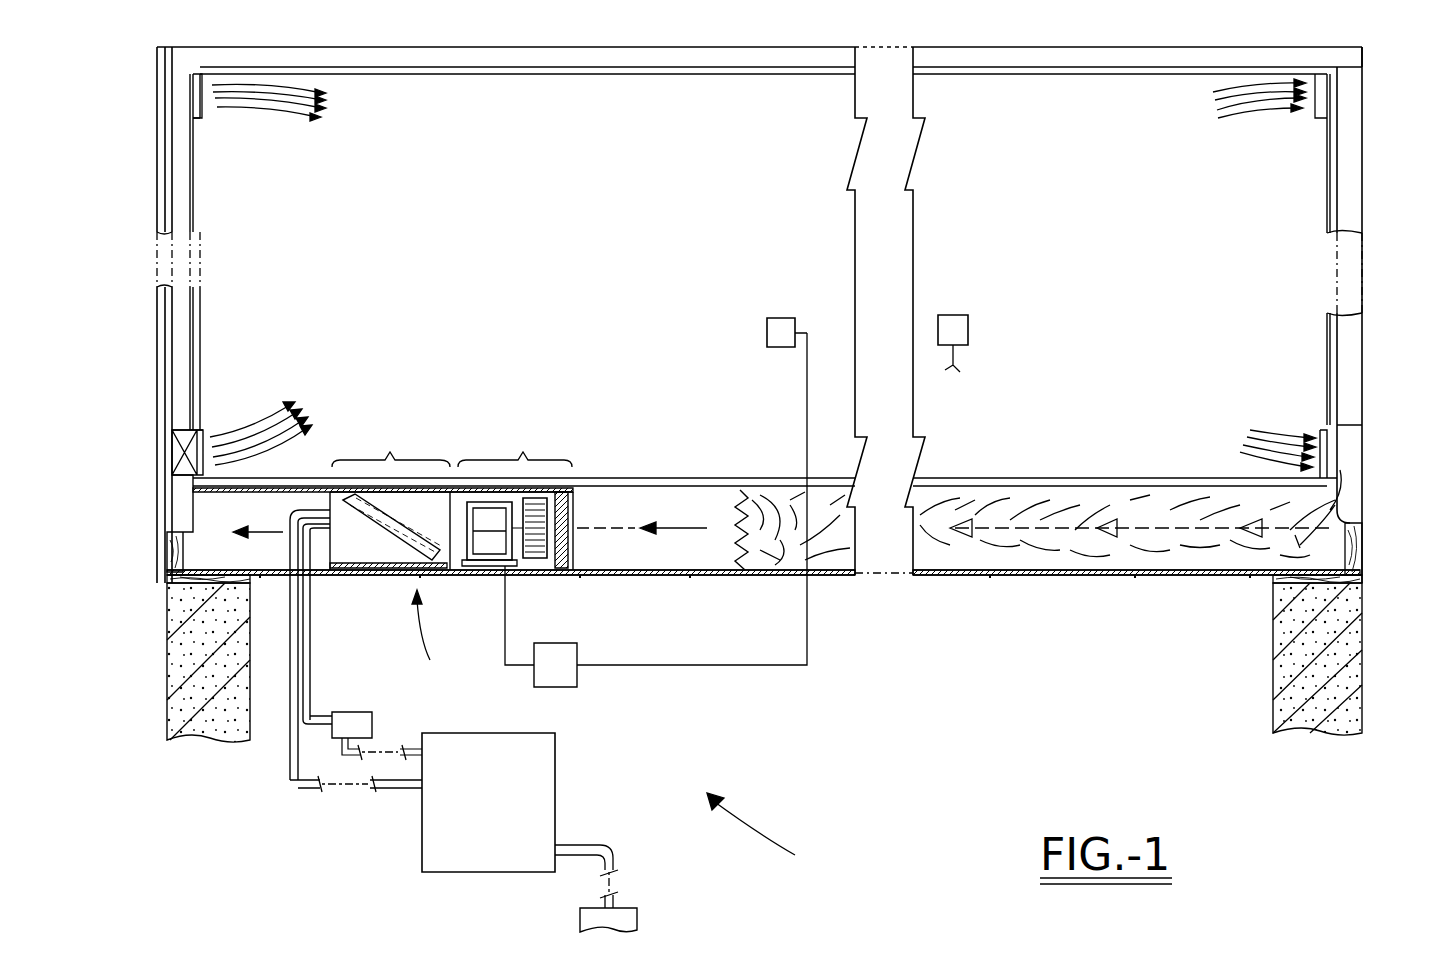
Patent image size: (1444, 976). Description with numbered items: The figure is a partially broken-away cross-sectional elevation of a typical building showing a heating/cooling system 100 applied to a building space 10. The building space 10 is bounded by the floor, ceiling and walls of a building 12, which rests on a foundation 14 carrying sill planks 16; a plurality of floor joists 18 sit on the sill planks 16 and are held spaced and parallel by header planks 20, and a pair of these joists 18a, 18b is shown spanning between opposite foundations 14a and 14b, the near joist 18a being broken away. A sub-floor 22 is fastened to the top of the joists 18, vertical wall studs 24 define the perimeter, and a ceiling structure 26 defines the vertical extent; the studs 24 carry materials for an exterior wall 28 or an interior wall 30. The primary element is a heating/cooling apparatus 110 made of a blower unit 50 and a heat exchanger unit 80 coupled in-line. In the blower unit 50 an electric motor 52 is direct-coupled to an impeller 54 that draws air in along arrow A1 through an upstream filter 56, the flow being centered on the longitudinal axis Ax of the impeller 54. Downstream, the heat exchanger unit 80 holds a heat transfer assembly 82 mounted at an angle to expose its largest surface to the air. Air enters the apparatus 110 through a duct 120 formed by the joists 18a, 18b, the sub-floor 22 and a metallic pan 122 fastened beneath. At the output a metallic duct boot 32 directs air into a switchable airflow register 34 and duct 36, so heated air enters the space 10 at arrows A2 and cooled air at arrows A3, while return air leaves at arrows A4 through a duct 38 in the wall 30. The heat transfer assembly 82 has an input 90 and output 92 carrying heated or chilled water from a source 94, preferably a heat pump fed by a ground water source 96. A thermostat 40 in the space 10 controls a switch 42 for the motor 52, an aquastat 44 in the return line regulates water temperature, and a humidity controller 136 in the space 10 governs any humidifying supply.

The building space 10 is at (1002, 243).
The building 12 is at (157, 207).
The foundation 14 is at (167, 650).
The foundation 14a is at (175, 720).
The foundation 14b is at (1277, 700).
The sill planks 16 is at (165, 580).
The floor joists 18 is at (1118, 563).
The floor joist 18a is at (777, 500).
The floor joist 18b is at (670, 498).
The header planks 20 is at (167, 548).
The sub-floor 22 is at (605, 484).
The wall studs 24 is at (182, 328).
The ceiling structure 26 is at (560, 75).
The exterior wall 28 is at (157, 367).
The interior wall 30 is at (1327, 203).
The duct boot 32 is at (225, 538).
The airflow register 34 is at (177, 453).
The duct 36 is at (178, 388).
The duct 38 is at (1345, 397).
The thermostat 40 is at (767, 333).
The switch 42 is at (577, 684).
The aquastat 44 is at (372, 718).
The blower unit 50 is at (511, 498).
The electric motor 52 is at (490, 562).
The impeller 54 is at (536, 560).
The filter 56 is at (563, 570).
The heat exchanger unit 80 is at (390, 500).
The heat transfer assembly 82 is at (392, 556).
The input 90 is at (290, 765).
The output 92 is at (310, 668).
The source 94 is at (422, 838).
The ground water source 96 is at (637, 920).
The heating/cooling system 100 is at (781, 837).
The heating/cooling apparatus 110 is at (439, 640).
The duct 120 is at (1100, 508).
The metallic pan 122 is at (697, 578).
The humidity controller 136 is at (968, 330).
The reference arrow A1 is at (686, 526).
The central longitudinal axis Ax is at (598, 526).
The arrows A2 is at (281, 427).
The arrows A3 is at (289, 106).
The arrows A4 is at (1240, 275).